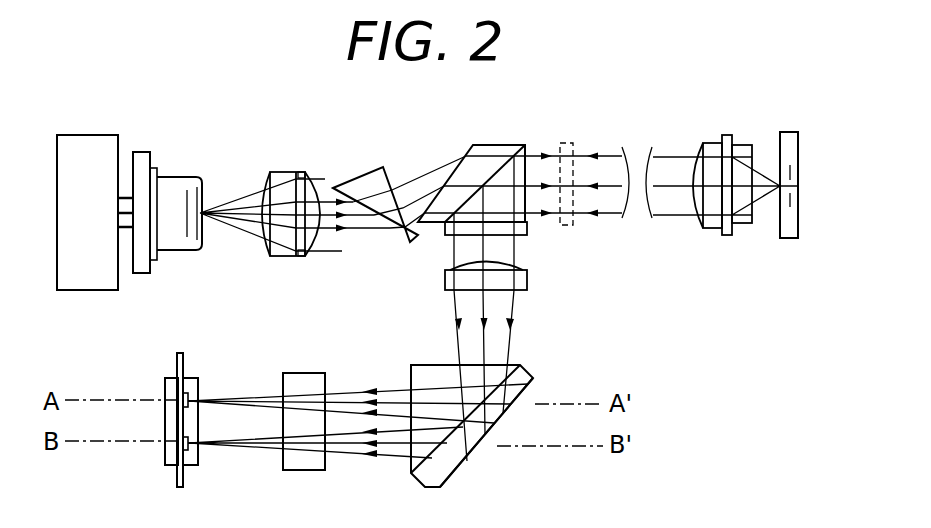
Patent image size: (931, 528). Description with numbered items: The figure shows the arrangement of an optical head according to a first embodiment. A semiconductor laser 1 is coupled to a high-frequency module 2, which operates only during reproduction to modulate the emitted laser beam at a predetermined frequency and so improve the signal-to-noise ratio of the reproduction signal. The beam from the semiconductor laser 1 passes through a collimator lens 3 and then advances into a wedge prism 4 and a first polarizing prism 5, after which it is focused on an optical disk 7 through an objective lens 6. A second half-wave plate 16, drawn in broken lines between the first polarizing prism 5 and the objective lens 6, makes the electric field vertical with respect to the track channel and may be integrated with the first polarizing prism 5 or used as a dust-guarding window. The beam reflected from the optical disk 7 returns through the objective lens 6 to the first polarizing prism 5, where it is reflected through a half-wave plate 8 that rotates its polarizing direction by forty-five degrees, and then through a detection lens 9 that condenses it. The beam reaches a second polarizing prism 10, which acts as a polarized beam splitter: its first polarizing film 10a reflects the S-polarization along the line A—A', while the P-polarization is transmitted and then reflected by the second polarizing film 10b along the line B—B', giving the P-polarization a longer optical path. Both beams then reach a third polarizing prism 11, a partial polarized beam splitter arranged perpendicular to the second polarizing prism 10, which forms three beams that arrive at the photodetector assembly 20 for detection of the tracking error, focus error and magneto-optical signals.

The semiconductor laser 1 is at (148, 160).
The high-frequency module 2 is at (83, 142).
The collimator lens 3 is at (270, 178).
The wedge prism 4 is at (362, 181).
The first polarizing prism 5 is at (493, 147).
The objective lens 6 is at (711, 148).
The optical disk 7 is at (783, 223).
The half-wave plate 8 is at (528, 230).
The detection lens 9 is at (520, 278).
The second polarizing prism 10 is at (509, 434).
The first polarizing film 10a is at (428, 486).
The second polarizing film 10b is at (462, 468).
The third polarizing prism 11 is at (288, 372).
The second half-wave plate 16 is at (575, 141).
The photodetector assembly 20 is at (168, 383).